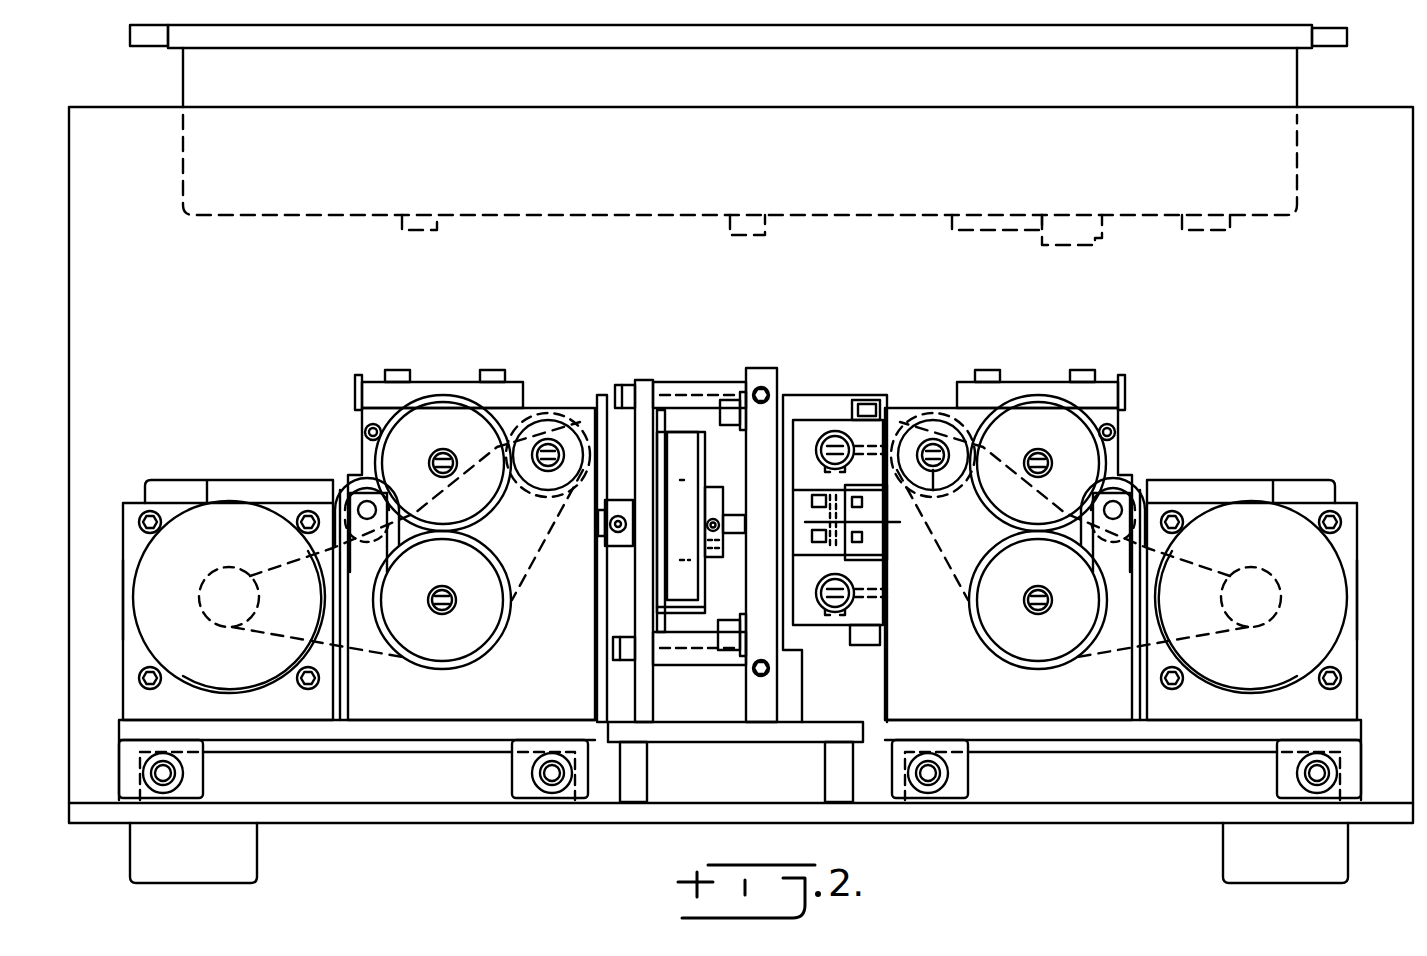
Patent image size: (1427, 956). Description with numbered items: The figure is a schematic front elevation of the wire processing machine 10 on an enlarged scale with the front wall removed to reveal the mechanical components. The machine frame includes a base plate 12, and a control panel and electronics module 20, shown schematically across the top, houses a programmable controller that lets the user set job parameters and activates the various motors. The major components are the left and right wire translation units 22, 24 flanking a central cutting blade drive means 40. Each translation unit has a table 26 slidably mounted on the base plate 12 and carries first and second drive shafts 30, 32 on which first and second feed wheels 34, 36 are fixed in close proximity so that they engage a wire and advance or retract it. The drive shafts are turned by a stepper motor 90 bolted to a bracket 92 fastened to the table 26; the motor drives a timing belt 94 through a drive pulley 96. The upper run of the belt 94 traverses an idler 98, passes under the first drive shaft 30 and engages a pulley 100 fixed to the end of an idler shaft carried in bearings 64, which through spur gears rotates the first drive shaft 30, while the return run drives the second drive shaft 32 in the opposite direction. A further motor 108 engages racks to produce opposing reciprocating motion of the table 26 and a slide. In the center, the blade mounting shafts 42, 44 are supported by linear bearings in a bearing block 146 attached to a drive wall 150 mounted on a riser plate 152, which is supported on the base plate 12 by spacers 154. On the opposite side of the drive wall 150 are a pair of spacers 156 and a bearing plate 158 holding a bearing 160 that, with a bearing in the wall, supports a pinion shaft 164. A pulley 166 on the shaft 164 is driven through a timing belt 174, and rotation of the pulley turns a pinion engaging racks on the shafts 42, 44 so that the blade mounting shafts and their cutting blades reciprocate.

The wire processing machine 10 is at (748, 424).
The base plate 12 is at (1387, 812).
The control panel and electronics module 20 is at (1300, 180).
The left wire translation unit 22 is at (117, 527).
The right wire translation unit 24 is at (1374, 514).
The table 26 is at (126, 733).
The first drive shaft 30 is at (447, 443).
The second drive shaft 32 is at (446, 603).
The first feed wheel 34 is at (466, 369).
The second feed wheel 36 is at (463, 663).
The cutting blade drive means 40 is at (843, 384).
The upper blade mounting shaft 42 is at (839, 440).
The lower blade mounting shaft 44 is at (830, 613).
The bearings 64 is at (937, 489).
The stepper motor 90 is at (150, 627).
The bracket 92 is at (123, 594).
The timing belt 94 is at (268, 568).
The drive pulley 96 is at (206, 591).
The idler 98 is at (351, 479).
The pulley 100 is at (593, 388).
The motor 108 is at (258, 467).
The bearing block 146 is at (805, 402).
The drive wall 150 is at (770, 367).
The riser plate 152 is at (856, 726).
The spacers 154 is at (640, 772).
The spacers 156 is at (713, 382).
The bearing plate 158 is at (646, 380).
The bearing 160 is at (633, 496).
The pinion shaft 164 is at (736, 518).
The pulley 166 is at (700, 604).
The timing belt 174 is at (672, 574).